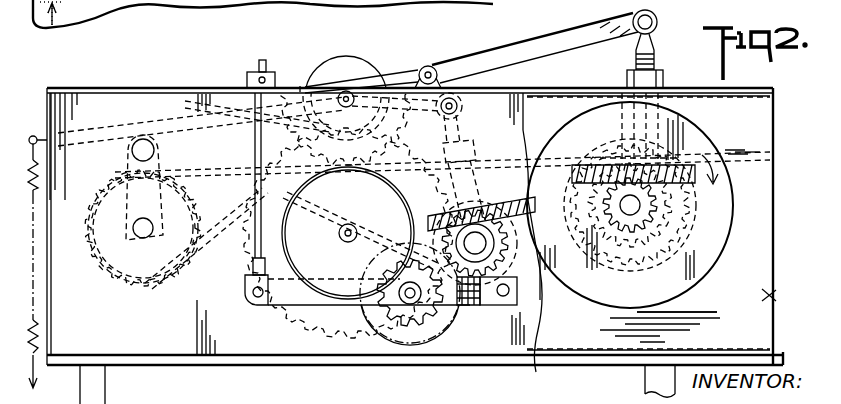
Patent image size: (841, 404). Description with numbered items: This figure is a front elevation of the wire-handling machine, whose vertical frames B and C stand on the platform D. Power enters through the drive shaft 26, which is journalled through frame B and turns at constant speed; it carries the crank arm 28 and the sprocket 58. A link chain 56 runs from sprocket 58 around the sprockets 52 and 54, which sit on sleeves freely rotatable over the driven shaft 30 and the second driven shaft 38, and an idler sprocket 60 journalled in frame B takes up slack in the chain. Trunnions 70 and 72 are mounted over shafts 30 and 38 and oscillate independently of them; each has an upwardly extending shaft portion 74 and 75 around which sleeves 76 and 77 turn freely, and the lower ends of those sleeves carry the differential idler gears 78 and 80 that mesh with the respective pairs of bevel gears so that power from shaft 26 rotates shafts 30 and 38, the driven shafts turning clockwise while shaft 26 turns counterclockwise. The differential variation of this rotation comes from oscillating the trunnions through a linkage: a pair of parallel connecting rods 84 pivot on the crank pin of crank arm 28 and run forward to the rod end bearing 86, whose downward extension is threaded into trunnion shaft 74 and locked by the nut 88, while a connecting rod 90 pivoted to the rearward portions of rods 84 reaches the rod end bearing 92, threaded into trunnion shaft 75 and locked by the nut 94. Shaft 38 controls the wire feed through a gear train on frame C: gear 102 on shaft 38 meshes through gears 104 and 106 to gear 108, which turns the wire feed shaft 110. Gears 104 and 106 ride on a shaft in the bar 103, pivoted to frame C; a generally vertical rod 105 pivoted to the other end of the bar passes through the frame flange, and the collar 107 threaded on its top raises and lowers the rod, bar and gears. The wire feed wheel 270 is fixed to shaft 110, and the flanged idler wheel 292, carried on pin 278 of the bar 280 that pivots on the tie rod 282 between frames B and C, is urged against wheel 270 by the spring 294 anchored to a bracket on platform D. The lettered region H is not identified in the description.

The drive shaft 26 is at (138, 237).
The crank arm 28 is at (104, 176).
The driven shaft 30 is at (640, 206).
The second driven shaft 38 is at (494, 243).
The sprocket 52 is at (678, 250).
The sprocket 54 is at (552, 298).
The link chain 56 is at (613, 278).
The sprocket 58 is at (158, 283).
The idler sprocket 60 is at (238, 257).
The trunnion 70 is at (650, 262).
The trunnion 72 is at (497, 306).
The trunnion shaft portion 74 is at (700, 113).
The trunnion shaft portion 75 is at (480, 178).
The sleeve 76 is at (716, 134).
The sleeve 77 is at (474, 153).
The differential idler gear 78 is at (770, 163).
The differential idler gear 80 is at (541, 209).
The connecting rods 84 is at (517, 47).
The rod end bearing 86 is at (657, 17).
The nut 88 is at (663, 76).
The connecting rod 90 is at (361, 100).
The rod end bearing 92 is at (462, 106).
The nut 94 is at (467, 140).
The gear 102 is at (483, 298).
The bar 103 is at (271, 305).
The gear 104 is at (422, 332).
The rod 105 is at (326, 70).
The gear 106 is at (403, 313).
The collar 107 is at (248, 78).
The gear 108 is at (334, 201).
The wire feed shaft 110 is at (357, 230).
The wire feed wheel 270 is at (340, 334).
The pin 278 is at (386, 70).
The bar 280 is at (146, 117).
The tie rod 282 is at (434, 66).
The idler wheel 292 is at (354, 62).
The spring 294 is at (45, 343).
The frame B is at (773, 296).
The frame C is at (532, 244).
The platform D is at (141, 3).
The housing H is at (694, 293).